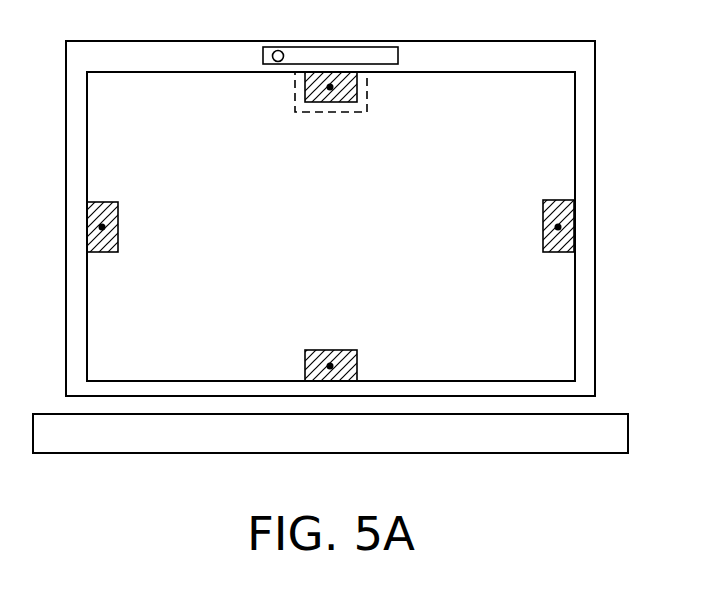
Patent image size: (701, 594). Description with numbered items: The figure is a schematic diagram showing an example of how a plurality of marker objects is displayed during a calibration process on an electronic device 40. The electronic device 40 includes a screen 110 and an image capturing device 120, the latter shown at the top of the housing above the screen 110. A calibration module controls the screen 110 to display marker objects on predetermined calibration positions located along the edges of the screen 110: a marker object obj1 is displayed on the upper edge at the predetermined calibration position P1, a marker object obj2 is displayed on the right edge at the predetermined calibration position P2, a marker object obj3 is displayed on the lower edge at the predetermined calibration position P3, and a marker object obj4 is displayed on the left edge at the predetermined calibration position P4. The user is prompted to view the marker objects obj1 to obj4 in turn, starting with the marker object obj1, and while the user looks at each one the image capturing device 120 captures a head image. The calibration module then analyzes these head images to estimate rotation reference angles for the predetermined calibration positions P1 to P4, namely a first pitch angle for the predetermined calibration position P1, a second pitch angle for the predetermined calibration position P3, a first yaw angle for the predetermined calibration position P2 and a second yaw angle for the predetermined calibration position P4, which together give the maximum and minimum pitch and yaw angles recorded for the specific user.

The electronic device 40 is at (538, 41).
The screen 110 is at (575, 118).
The image capturing device 120 is at (346, 47).
The marker object obj1 is at (330, 102).
The marker object obj2 is at (558, 200).
The marker object obj3 is at (357, 364).
The marker object obj4 is at (103, 252).
The predetermined calibration position P1 is at (330, 87).
The predetermined calibration position P2 is at (558, 227).
The predetermined calibration position P3 is at (330, 366).
The predetermined calibration position P4 is at (102, 227).